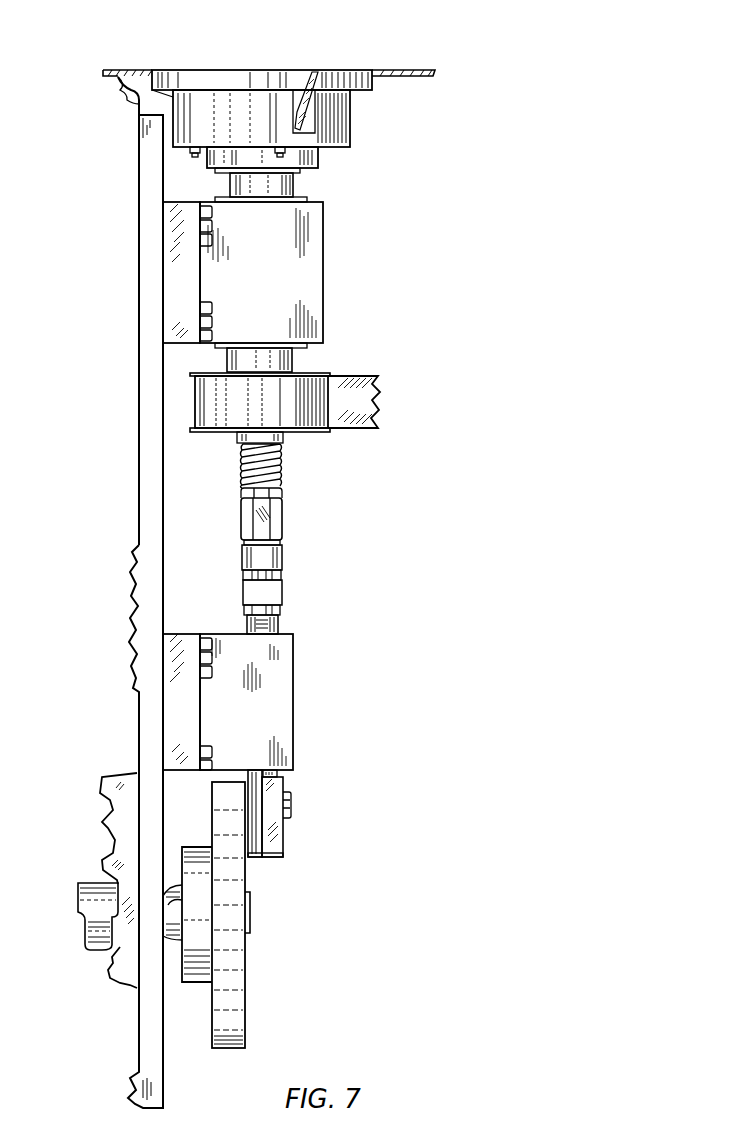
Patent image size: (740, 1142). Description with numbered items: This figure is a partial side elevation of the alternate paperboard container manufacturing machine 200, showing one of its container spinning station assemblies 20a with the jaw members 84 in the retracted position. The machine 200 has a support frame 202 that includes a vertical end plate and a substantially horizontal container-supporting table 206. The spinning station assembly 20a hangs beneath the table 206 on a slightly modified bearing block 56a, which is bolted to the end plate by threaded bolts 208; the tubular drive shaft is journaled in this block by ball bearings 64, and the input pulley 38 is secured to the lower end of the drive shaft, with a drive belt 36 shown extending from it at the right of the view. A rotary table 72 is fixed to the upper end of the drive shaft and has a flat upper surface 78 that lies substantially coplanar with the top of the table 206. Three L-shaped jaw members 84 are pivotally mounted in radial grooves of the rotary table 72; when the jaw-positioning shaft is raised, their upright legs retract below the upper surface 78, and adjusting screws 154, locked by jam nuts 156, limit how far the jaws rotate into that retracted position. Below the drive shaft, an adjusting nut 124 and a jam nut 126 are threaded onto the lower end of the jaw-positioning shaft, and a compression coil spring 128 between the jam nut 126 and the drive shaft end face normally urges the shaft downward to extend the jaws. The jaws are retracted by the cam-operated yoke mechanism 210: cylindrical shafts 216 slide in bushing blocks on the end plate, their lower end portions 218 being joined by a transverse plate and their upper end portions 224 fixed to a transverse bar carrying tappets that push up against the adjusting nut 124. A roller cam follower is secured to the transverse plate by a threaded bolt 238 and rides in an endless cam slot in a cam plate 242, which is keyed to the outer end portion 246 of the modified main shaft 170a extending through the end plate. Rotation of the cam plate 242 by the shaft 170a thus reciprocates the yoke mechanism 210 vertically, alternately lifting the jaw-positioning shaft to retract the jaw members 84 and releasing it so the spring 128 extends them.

The paperboard container manufacturing machine 200 is at (255, 46).
The container-supporting table 206 is at (125, 70).
The upper surface 78 is at (293, 70).
The jaw member 84 is at (306, 115).
The rotary table 72 is at (352, 103).
The jam nut 156 is at (190, 149).
The adjusting screw 154 is at (192, 156).
The ball bearing 64 is at (230, 186).
The container spinning station assembly 20a is at (327, 182).
The bearing block 56a is at (320, 262).
The threaded bolt 208 is at (212, 210).
The disc 36 is at (378, 396).
The input pulley 38 is at (198, 432).
The compression coil spring 128 is at (283, 460).
The jam nut 126 is at (240, 493).
The adjusting nut 124 is at (283, 514).
The support frame 202 is at (143, 492).
The upper end portion 224 is at (283, 622).
The cam-operated yoke mechanism 210 is at (313, 726).
The cylindrical shaft 216 is at (278, 773).
The threaded bolt 238 is at (292, 804).
The lower end portion 218 is at (265, 835).
The cam plate 242 is at (238, 886).
The outer end portion 246 is at (250, 908).
The main shaft 170a is at (92, 883).